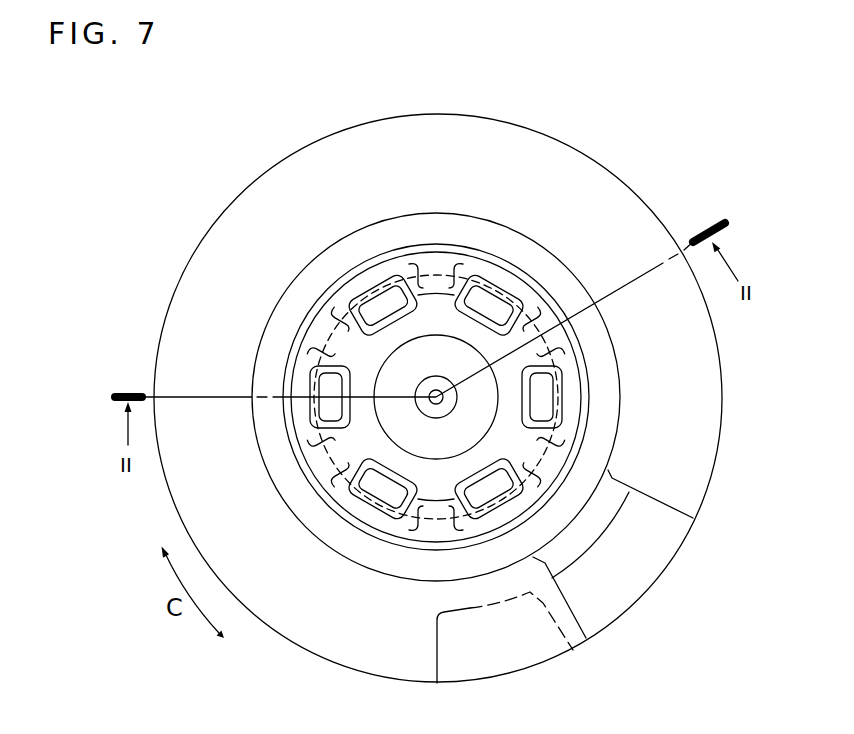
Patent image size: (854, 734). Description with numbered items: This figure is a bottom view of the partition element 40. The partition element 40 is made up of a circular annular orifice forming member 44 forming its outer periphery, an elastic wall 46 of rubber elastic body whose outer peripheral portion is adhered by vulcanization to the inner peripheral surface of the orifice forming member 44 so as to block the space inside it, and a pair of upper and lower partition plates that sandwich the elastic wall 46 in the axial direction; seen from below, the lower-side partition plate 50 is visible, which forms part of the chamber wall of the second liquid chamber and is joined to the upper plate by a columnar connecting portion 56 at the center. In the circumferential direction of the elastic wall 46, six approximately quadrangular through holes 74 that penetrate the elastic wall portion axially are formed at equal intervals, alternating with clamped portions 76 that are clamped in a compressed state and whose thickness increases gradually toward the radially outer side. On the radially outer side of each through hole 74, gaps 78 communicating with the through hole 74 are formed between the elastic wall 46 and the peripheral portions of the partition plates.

The partition element 40 is at (429, 73).
The orifice forming member 44 is at (615, 210).
The elastic wall 46 is at (521, 268).
The partition plate 50 is at (577, 399).
The connecting portion 56 is at (435, 405).
The through holes 74 is at (350, 303).
The clamped portions 76 is at (312, 468).
The gaps 78 is at (318, 416).